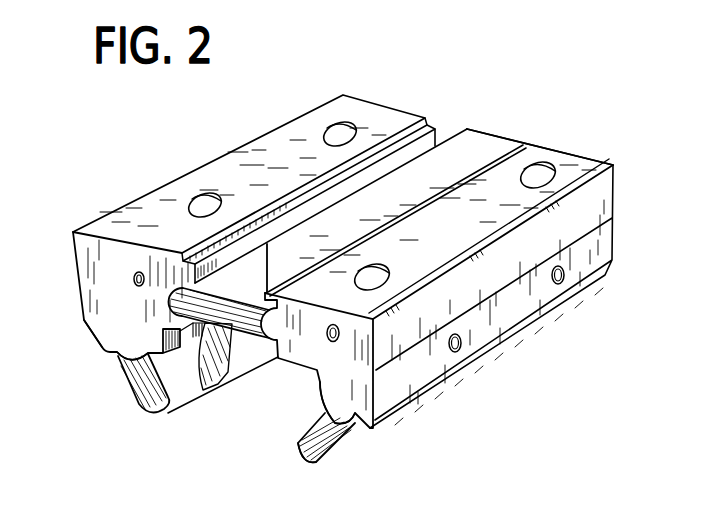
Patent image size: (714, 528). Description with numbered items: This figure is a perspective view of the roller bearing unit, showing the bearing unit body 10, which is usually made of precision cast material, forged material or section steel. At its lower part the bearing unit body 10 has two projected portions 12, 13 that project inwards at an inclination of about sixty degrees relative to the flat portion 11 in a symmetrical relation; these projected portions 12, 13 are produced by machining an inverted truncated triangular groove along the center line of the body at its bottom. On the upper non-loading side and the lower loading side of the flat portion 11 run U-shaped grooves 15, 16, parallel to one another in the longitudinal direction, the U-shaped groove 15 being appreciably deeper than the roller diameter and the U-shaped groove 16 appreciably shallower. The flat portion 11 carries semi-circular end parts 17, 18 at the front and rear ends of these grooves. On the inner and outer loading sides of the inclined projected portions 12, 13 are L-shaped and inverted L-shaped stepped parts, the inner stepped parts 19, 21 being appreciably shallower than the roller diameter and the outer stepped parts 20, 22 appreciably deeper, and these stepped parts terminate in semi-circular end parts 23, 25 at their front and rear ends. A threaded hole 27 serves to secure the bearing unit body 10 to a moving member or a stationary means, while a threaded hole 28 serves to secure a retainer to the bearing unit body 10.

The bearing unit body 10 is at (554, 153).
The flat portion 11 is at (393, 117).
The projected portion 12 is at (320, 377).
The projected portion 13 is at (95, 332).
The U-shaped groove 15 is at (478, 142).
The U-shaped groove 16 is at (212, 372).
The semi-circular end part 17 is at (236, 316).
The semi-circular end part 18 is at (494, 132).
The inner stepped part 19 is at (298, 433).
The outer stepped part 20 is at (353, 433).
The inner stepped part 21 is at (180, 392).
The outer stepped part 22 is at (116, 356).
The semi-circular end part 23 is at (302, 448).
The semi-circular end part 25 is at (133, 387).
The threaded hole 27 is at (201, 203).
The threaded hole 28 is at (136, 285).